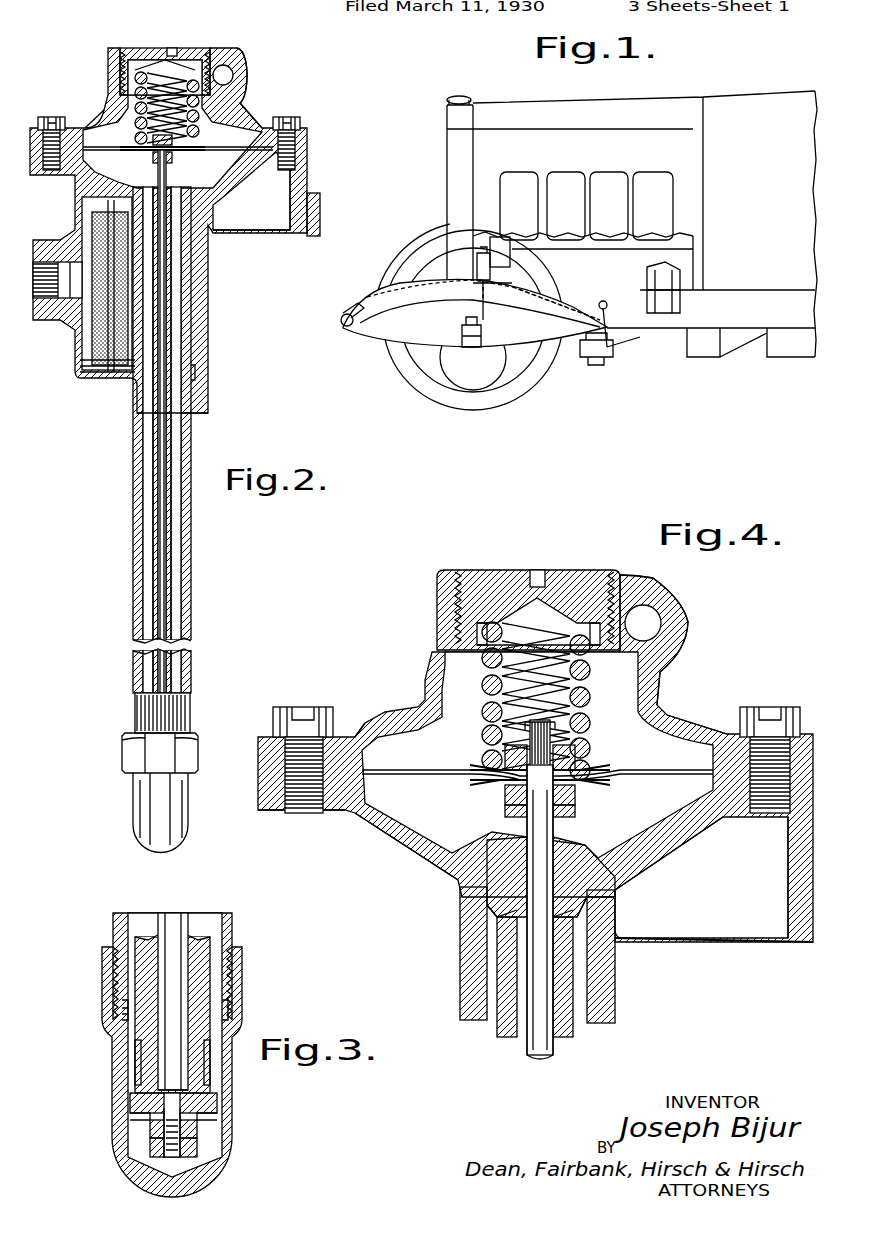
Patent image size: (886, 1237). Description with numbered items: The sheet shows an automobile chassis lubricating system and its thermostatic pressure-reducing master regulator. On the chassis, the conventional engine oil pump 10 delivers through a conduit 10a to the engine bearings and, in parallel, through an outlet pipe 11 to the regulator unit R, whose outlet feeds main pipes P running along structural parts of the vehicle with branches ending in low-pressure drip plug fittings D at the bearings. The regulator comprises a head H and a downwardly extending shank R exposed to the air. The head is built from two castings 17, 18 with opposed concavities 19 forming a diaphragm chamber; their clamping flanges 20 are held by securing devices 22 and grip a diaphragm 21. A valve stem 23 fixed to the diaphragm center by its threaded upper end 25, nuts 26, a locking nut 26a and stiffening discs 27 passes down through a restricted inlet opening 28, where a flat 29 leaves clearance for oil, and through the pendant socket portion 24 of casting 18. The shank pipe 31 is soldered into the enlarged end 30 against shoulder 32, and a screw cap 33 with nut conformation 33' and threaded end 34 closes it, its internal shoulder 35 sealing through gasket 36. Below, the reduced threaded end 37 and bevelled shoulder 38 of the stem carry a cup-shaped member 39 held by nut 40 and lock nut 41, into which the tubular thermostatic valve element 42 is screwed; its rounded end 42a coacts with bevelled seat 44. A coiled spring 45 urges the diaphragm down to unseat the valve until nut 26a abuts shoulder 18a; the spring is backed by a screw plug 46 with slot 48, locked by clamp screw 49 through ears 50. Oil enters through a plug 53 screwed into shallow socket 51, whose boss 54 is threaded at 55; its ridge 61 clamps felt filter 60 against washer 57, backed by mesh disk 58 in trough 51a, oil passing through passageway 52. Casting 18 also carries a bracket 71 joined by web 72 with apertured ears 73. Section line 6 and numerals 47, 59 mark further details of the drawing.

In FIG. 2, the section line 6 is at (167, 265).
In FIG. 1, the oil pump 10 is at (600, 357).
In FIG. 1, the conduit 10a is at (632, 342).
In FIG. 1, the outlet pipe 11 is at (548, 292).
In FIG. 2, the casting 17 is at (247, 118).
In FIG. 4, the casting 17 is at (672, 712).
In FIG. 2, the casting 18 is at (262, 170).
In FIG. 4, the casting 18 is at (700, 833).
In FIG. 4, the shoulder 18a is at (440, 870).
In FIG. 2, the concavities 19 is at (95, 120).
In FIG. 4, the concavities 19 is at (375, 737).
In FIG. 2, the clamping flanges 20 is at (307, 140).
In FIG. 4, the clamping flanges 20 is at (258, 748).
In FIG. 2, the diaphragm 21 is at (232, 152).
In FIG. 4, the diaphragm 21 is at (480, 790).
In FIG. 2, the securing devices 22 is at (300, 123).
In FIG. 4, the securing devices 22 is at (285, 706).
In FIG. 2, the valve stem 23 is at (166, 322).
In FIG. 3, the valve stem 23 is at (185, 935).
In FIG. 4, the valve stem 23 is at (527, 1058).
In FIG. 2, the pendant socket portion 24 is at (193, 353).
In FIG. 4, the pendant socket portion 24 is at (617, 1015).
In FIG. 4, the threaded upper end 25 is at (565, 725).
In FIG. 2, the nuts 26 is at (162, 149).
In FIG. 4, the nuts 26 is at (572, 800).
In FIG. 4, the locking nut 26a is at (577, 815).
In FIG. 4, the stiffening discs 27 is at (488, 768).
In FIG. 4, the inlet opening 28 is at (500, 877).
In FIG. 4, the flat 29 is at (495, 905).
In FIG. 2, the lower enlarged end 30 is at (196, 412).
In FIG. 2, the pipe 31 is at (191, 578).
In FIG. 2, the shoulder 32 is at (196, 372).
In FIG. 2, the screw cap 33 is at (139, 813).
In FIG. 3, the screw cap 33 is at (149, 1055).
In FIG. 2, the nut conformation 33' is at (136, 757).
In FIG. 3, the nut conformation 33' is at (144, 983).
In FIG. 3, the internally threaded end 34 is at (237, 970).
In FIG. 3, the internal shoulder 35 is at (230, 1012).
In FIG. 3, the gasket 36 is at (120, 1010).
In FIG. 3, the reduced threaded lower end 37 is at (164, 1140).
In FIG. 3, the bevelled shoulder 38 is at (217, 1102).
In FIG. 3, the cup-shaped member 39 is at (130, 1100).
In FIG. 3, the nut 40 is at (197, 1128).
In FIG. 3, the lock nut 41 is at (197, 1150).
In FIG. 2, the tubular thermostatic valve element 42 is at (172, 553).
In FIG. 3, the tubular thermostatic valve element 42 is at (212, 950).
In FIG. 4, the tubular thermostatic valve element 42 is at (565, 1030).
In FIG. 4, the rounded upper end 42a is at (505, 930).
In FIG. 4, the bevelled seat 44 is at (580, 920).
In FIG. 2, the coiled expansion spring 45 is at (138, 95).
In FIG. 4, the coiled expansion spring 45 is at (590, 700).
In FIG. 2, the screw plug 46 is at (145, 52).
In FIG. 4, the screw plug 46 is at (585, 578).
In FIG. 2, the threads 47 is at (120, 60).
In FIG. 4, the threads 47 is at (455, 605).
In FIG. 4, the screw driver slot 48 is at (537, 570).
In FIG. 2, the clamp screw 49 is at (233, 75).
In FIG. 4, the clamp screw 49 is at (655, 630).
In FIG. 2, the ears 50 is at (238, 56).
In FIG. 4, the ears 50 is at (678, 613).
In FIG. 2, the shallow socket 51 is at (100, 372).
In FIG. 2, the shallow trough 51a is at (125, 380).
In FIG. 2, the passageway 52 is at (85, 345).
In FIG. 2, the plug 53 is at (80, 205).
In FIG. 2, the central boss 54 is at (75, 250).
In FIG. 2, the internal threads 55 is at (50, 318).
In FIG. 2, the washer 57 is at (115, 378).
In FIG. 2, the corrugated wire mesh disk 58 is at (90, 360).
In FIG. 2, the filter element 59 is at (95, 222).
In FIG. 2, the felt filter 60 is at (108, 378).
In FIG. 2, the peripheral ridge 61 is at (95, 366).
In FIG. 2, the pendant bracket portion 71 is at (307, 180).
In FIG. 4, the pendant bracket portion 71 is at (793, 893).
In FIG. 2, the strengthening web 72 is at (276, 228).
In FIG. 4, the strengthening web 72 is at (738, 928).
In FIG. 2, the apertured ears 73 is at (320, 215).
In FIG. 2, the head H is at (257, 89).
In FIG. 4, the head H is at (418, 664).
In FIG. 1, the regulator unit / shank R is at (478, 273).
In FIG. 2, the regulator unit / shank R is at (133, 572).
In FIG. 1, the main pipes P is at (372, 294).
In FIG. 1, the drip plug fittings D is at (342, 312).